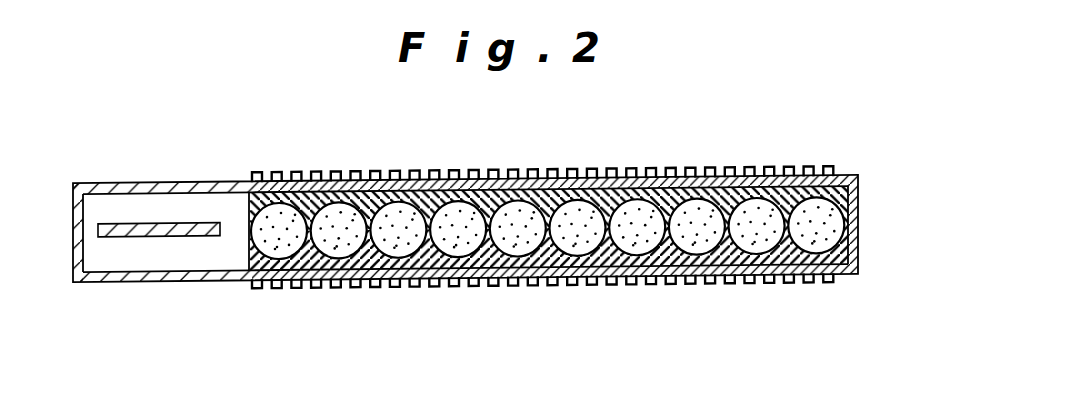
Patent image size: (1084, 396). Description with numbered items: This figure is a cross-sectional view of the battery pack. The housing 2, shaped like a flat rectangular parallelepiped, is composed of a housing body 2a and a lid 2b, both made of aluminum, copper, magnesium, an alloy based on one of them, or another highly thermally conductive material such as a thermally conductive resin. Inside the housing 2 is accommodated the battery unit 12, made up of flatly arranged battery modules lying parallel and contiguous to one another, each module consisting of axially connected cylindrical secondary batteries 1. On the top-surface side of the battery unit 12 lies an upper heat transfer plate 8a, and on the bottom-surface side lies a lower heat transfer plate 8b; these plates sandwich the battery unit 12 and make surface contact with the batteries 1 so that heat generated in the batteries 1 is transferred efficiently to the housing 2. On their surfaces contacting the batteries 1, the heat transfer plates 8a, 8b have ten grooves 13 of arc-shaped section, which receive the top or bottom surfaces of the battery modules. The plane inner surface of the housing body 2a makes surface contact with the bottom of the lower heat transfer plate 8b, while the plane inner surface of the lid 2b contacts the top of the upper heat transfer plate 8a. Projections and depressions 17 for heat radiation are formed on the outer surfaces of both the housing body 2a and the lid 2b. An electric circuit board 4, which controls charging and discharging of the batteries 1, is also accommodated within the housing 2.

The cylindrical secondary battery 1 is at (575, 246).
The housing 2 is at (858, 207).
The housing body 2a is at (207, 282).
The lid 2b is at (208, 184).
The electric circuit board 4 is at (128, 222).
The upper heat transfer plate 8a is at (788, 177).
The lower heat transfer plate 8b is at (257, 290).
The battery unit 12 is at (245, 242).
The grooves 13 is at (690, 205).
The projections and depressions 17 is at (575, 173).